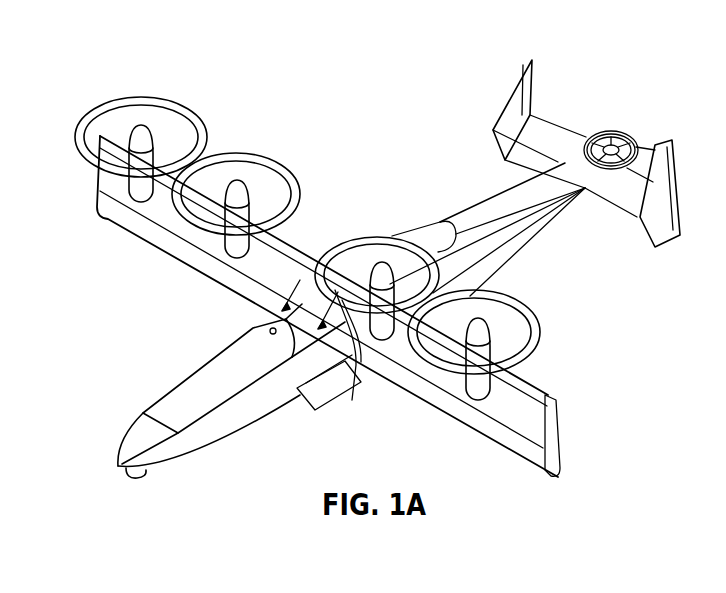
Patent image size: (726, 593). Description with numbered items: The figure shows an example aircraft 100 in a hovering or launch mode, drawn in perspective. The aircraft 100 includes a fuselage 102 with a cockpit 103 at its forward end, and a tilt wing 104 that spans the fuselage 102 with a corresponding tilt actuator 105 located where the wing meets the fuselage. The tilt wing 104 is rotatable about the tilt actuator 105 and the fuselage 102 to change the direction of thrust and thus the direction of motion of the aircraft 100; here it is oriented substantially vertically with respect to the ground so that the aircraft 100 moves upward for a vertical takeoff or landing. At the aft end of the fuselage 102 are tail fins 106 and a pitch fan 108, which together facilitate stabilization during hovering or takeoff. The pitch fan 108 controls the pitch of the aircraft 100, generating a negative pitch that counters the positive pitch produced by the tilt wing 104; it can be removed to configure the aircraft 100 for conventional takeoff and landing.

The aircraft 100 is at (186, 90).
The fuselage 102 is at (512, 262).
The cockpit 103 is at (205, 383).
The tilt wing 104 is at (152, 248).
The tilt actuator 105 is at (351, 372).
The tail fins 106 is at (564, 131).
The pitch fan 108 is at (624, 136).